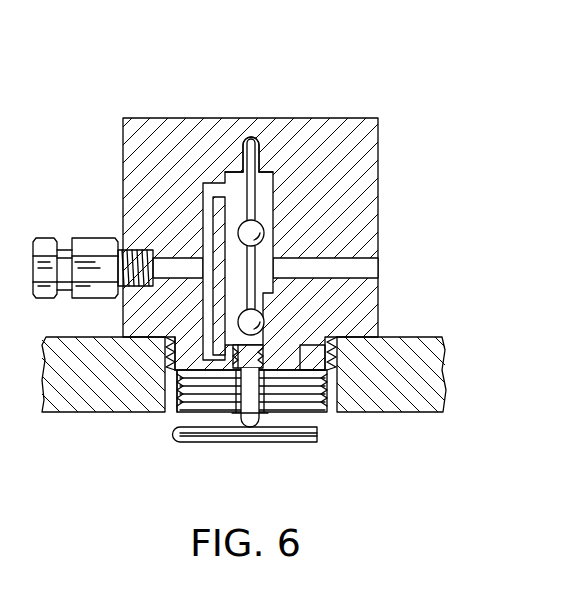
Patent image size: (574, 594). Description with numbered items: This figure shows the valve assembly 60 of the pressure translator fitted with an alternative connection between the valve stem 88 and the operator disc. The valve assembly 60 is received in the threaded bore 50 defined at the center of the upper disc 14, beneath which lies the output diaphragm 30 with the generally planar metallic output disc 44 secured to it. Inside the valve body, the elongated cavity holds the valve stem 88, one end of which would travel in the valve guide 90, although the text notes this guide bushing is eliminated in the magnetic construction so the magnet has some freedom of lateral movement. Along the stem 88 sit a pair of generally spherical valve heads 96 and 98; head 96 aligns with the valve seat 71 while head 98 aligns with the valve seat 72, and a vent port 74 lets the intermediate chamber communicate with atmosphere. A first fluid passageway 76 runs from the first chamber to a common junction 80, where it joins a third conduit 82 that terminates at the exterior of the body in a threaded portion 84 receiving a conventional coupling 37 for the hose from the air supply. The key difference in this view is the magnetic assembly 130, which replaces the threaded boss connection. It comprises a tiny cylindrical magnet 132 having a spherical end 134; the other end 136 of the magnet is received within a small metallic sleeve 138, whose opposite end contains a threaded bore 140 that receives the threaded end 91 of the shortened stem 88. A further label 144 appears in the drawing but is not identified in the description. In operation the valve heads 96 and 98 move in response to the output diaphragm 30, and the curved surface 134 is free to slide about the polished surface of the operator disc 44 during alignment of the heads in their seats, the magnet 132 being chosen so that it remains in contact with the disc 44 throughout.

The valve assembly 60 is at (285, 82).
The valve seat 71 is at (240, 215).
The valve guide 90 is at (262, 145).
The valve stem 88 is at (274, 172).
The first fluid passageway 76 is at (200, 208).
The common junction 80 is at (203, 255).
The coupling 37 is at (95, 245).
The threaded portion 84 is at (85, 300).
The third conduit 82 is at (175, 280).
The valve head 96 is at (262, 240).
The valve seat 72 is at (340, 258).
The vent port 74 is at (300, 288).
The valve head 98 is at (262, 322).
The threaded bore 140 is at (266, 346).
The collar thread 144 is at (330, 378).
The other end of the magnet 136 is at (300, 367).
The bore 50 is at (328, 383).
The upper disc 14 is at (420, 405).
The output disc 44 is at (318, 432).
The output diaphragm 30 is at (304, 438).
The cylindrical magnet 132 is at (258, 425).
The spherical end 134 is at (248, 422).
The magnetic assembly 130 is at (230, 416).
The metallic sleeve 138 is at (225, 395).
The threaded end 91 is at (235, 345).